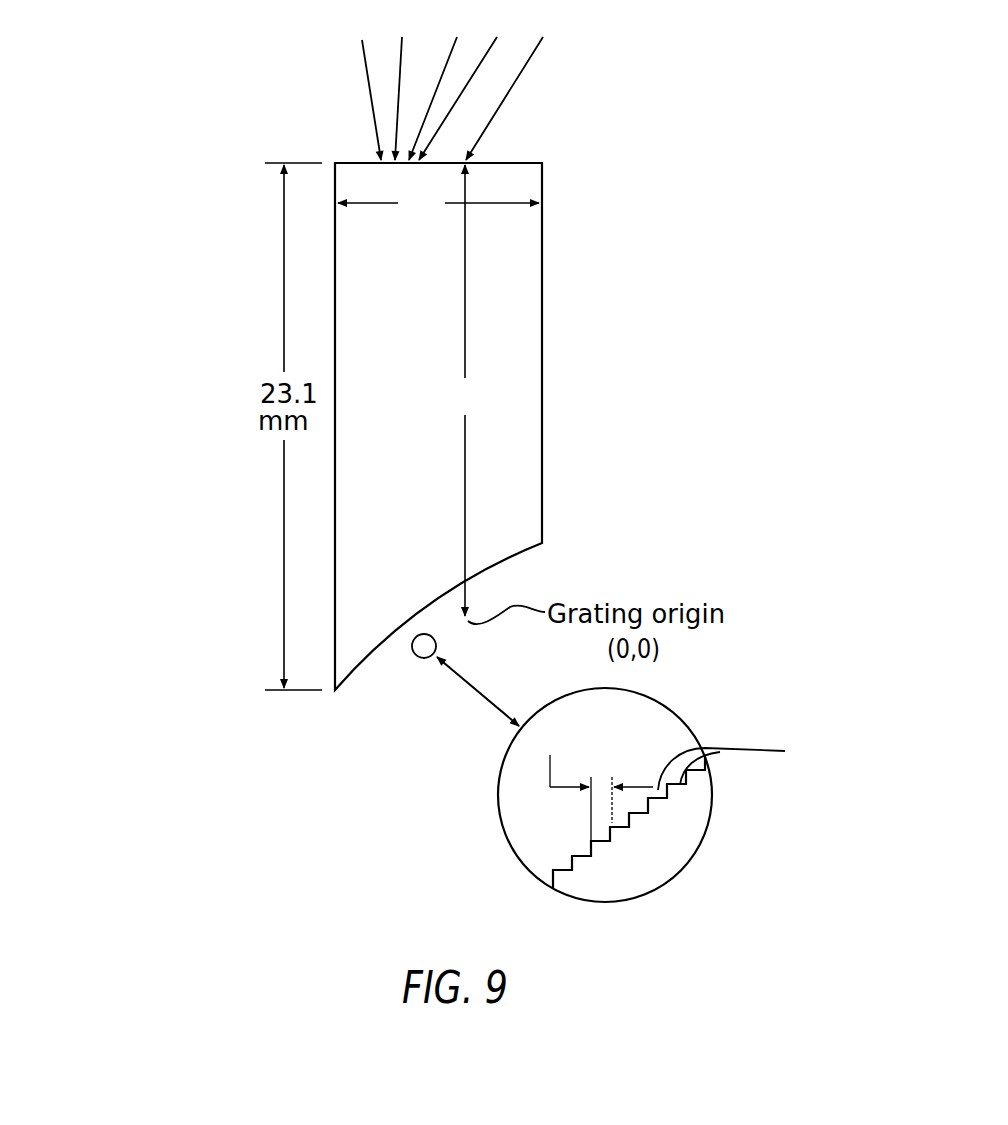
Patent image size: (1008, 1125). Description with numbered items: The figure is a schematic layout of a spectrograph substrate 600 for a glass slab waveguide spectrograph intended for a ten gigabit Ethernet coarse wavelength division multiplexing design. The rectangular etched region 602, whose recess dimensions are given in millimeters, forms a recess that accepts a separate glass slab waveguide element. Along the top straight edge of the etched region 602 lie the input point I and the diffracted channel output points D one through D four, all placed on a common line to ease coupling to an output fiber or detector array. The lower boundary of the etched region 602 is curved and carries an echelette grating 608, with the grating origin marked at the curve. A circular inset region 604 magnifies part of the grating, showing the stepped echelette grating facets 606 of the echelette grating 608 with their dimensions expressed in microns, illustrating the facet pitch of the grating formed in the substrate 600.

The spectrograph substrate 600 is at (190, 236).
The etched region 602 is at (520, 246).
The inset region 604 is at (687, 720).
The echelette grating facets 606 is at (750, 762).
The echelette grating 608 is at (703, 778).